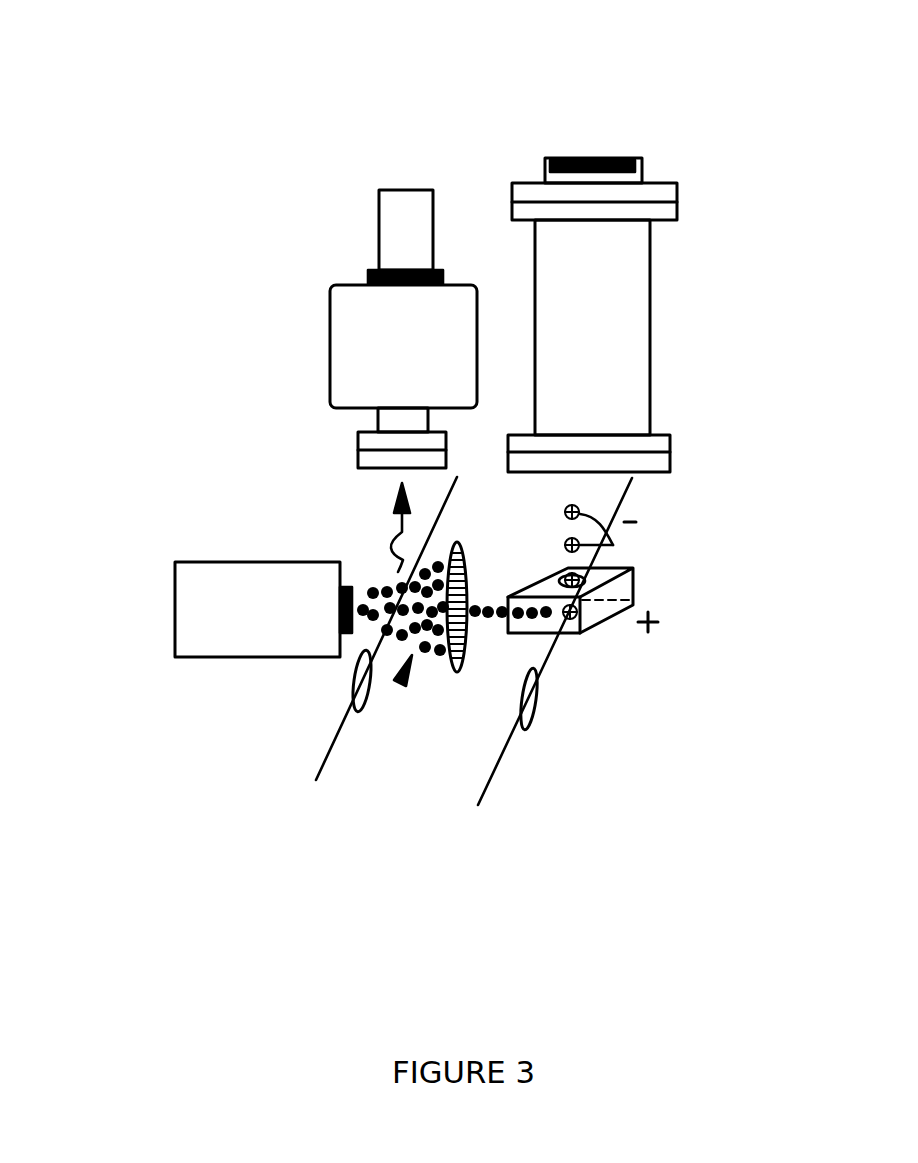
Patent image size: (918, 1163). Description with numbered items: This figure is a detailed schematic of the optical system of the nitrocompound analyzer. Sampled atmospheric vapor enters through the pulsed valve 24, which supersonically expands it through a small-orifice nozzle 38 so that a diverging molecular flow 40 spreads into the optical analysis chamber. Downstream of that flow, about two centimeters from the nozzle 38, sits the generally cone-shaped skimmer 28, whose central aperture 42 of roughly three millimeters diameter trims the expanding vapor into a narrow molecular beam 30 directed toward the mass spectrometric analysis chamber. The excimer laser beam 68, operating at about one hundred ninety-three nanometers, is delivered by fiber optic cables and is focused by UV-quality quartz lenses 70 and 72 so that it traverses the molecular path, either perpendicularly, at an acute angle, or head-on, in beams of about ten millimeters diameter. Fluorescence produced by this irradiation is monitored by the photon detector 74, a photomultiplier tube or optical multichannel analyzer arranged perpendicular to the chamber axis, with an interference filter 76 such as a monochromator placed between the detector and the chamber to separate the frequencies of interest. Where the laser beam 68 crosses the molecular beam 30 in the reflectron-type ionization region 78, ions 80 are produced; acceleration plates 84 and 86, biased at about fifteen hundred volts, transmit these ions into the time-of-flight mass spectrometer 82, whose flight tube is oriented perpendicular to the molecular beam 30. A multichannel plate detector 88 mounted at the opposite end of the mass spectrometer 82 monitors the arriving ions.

The pulsed valve 24 is at (213, 560).
The skimmer 28 is at (455, 673).
The molecular beam 30 is at (496, 622).
The small-orifice nozzle 38 is at (363, 587).
The diverging molecular flow 40 is at (400, 683).
The central aperture 42 is at (470, 602).
The laser beam 68 is at (327, 750).
The UV-quality quartz lens 70 is at (350, 673).
The UV-quality quartz lens 72 is at (538, 703).
The photon detector 74 is at (379, 212).
The interference filter 76 is at (423, 361).
The ionization region 78 is at (633, 585).
The ions 80 is at (613, 545).
The time-of-flight mass spectrometer 82 is at (609, 344).
The acceleration plate 84 is at (662, 621).
The acceleration plate 86 is at (640, 522).
The multichannel plate detector 88 is at (643, 182).